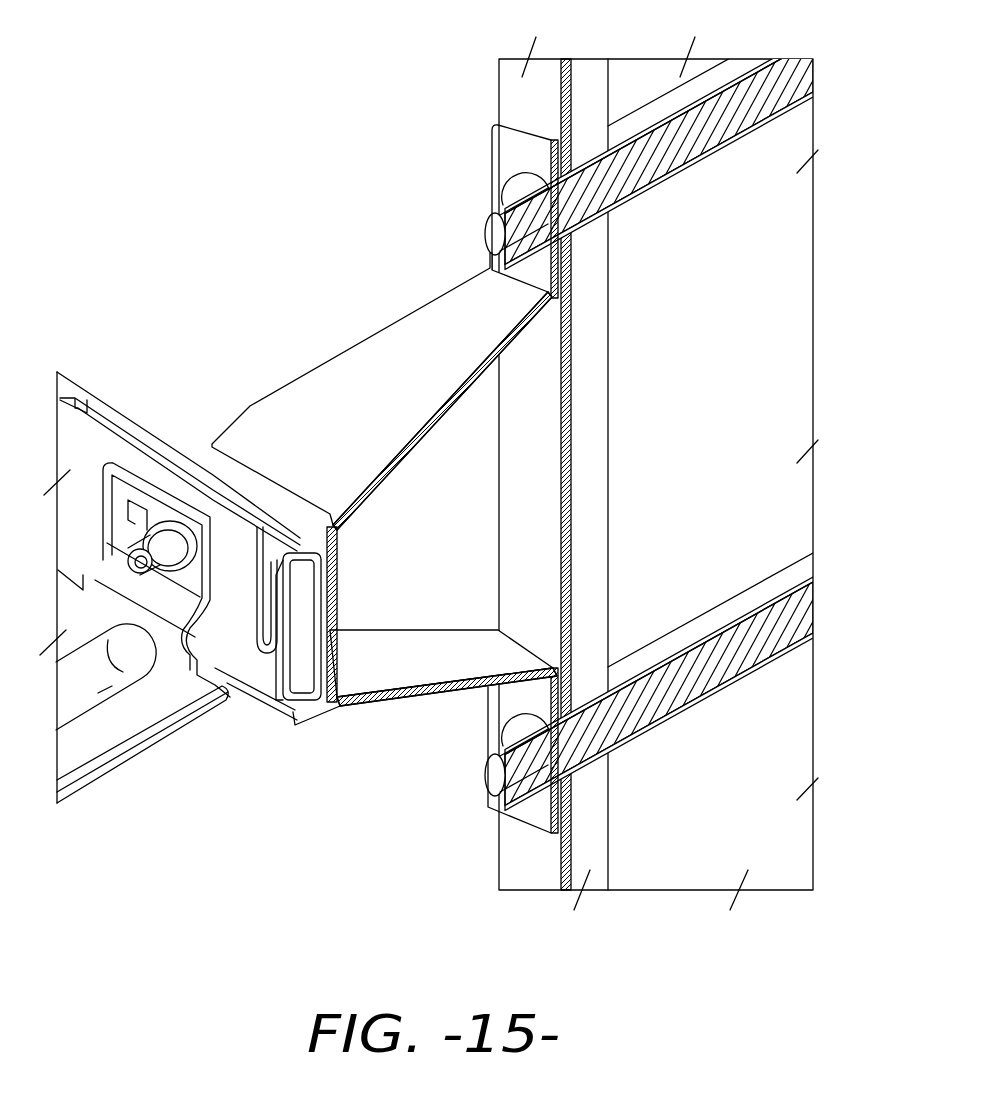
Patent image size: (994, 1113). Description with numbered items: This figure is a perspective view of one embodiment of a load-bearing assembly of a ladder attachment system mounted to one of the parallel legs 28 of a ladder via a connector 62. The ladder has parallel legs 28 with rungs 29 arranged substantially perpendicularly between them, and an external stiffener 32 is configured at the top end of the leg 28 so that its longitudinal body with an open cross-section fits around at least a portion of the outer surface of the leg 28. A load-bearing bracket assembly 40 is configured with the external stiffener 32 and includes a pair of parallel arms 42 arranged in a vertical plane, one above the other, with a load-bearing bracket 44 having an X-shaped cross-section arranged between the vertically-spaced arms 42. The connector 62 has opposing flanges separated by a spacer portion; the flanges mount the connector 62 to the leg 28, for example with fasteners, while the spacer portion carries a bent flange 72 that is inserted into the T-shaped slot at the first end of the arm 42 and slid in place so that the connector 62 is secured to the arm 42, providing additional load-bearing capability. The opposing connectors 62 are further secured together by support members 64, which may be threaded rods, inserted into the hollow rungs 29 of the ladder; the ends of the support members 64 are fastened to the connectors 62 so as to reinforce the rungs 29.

The parallel legs 28 is at (512, 855).
The rungs 29 is at (659, 407).
The external stiffener 32 is at (506, 92).
The load-bearing bracket assembly 40 is at (178, 579).
The parallel arms 42 is at (138, 413).
The load-bearing bracket 44 is at (118, 720).
The connector 62 is at (383, 327).
The support member 64 is at (650, 158).
The bent flange 72 is at (305, 673).